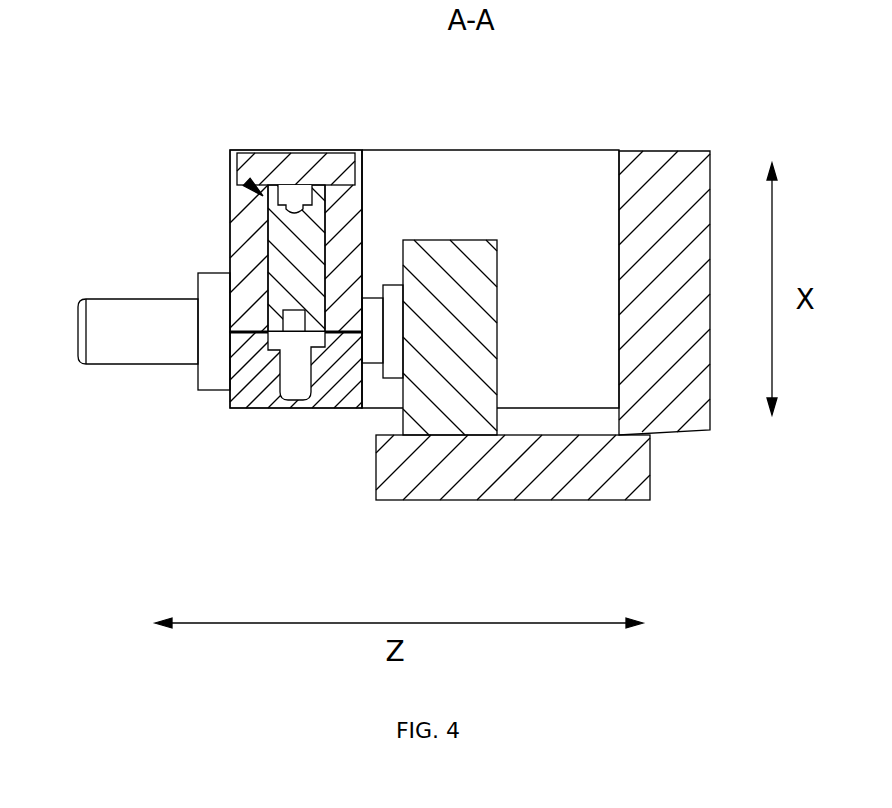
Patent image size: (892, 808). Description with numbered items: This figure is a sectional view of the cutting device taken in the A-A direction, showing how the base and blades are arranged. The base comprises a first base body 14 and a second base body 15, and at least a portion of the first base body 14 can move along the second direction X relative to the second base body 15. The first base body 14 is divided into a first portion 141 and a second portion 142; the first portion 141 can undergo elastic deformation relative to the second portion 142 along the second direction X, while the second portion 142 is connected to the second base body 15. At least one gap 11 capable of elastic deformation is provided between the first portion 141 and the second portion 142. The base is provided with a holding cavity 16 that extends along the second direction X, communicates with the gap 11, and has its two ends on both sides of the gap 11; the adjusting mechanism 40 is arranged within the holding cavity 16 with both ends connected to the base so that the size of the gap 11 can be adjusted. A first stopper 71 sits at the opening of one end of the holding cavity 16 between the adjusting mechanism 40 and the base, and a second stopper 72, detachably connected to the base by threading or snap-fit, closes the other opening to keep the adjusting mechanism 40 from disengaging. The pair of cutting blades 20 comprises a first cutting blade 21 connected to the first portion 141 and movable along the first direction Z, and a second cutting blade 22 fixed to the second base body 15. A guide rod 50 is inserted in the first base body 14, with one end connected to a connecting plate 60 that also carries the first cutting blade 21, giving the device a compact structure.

The gap 11 is at (231, 312).
The first base body 14 is at (209, 416).
The second base body 15 is at (510, 150).
The holding cavity 16 is at (246, 181).
The pair of cutting blades 20 is at (570, 382).
The first cutting blade 21 is at (465, 497).
The second cutting blade 22 is at (673, 415).
The adjusting mechanism 40 is at (270, 187).
The guide rod 50 is at (148, 315).
The connecting plate 60 is at (438, 240).
The first stopper 71 is at (297, 385).
The second stopper 72 is at (300, 168).
The first portion 141 is at (248, 410).
The second portion 142 is at (231, 225).